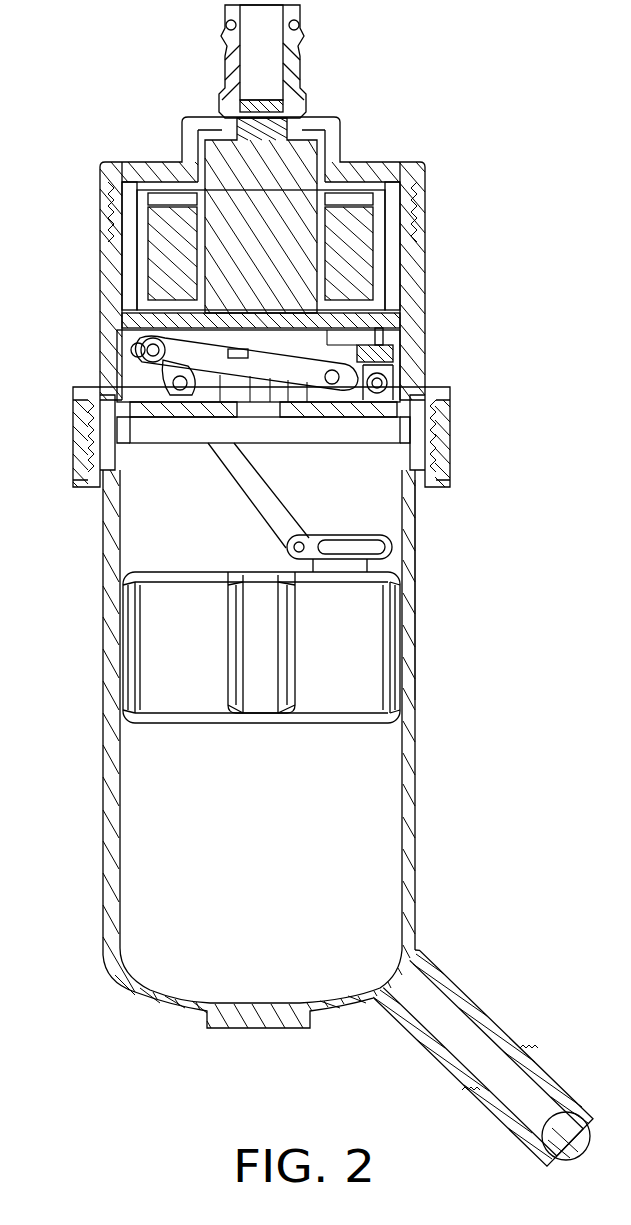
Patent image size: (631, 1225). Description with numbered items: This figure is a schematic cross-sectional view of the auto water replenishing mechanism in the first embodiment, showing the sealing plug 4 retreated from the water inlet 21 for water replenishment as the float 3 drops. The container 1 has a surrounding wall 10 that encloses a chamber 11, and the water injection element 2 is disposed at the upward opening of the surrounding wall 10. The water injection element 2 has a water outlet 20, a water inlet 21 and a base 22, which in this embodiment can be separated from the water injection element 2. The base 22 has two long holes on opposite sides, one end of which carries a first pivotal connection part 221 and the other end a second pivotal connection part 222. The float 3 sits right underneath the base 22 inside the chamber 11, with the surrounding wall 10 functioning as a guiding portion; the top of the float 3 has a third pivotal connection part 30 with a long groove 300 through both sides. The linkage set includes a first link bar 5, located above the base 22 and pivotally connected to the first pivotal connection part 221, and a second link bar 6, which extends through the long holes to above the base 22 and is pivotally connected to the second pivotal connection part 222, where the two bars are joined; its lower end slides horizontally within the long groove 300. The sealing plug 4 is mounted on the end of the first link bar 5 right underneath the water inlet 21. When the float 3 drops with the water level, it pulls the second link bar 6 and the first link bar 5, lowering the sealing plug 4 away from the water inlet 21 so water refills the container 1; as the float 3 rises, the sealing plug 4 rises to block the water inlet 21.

The container 1 is at (428, 609).
The water injection element 2 is at (425, 250).
The float 3 is at (320, 708).
The sealing plug 4 is at (412, 358).
The first link bar 5 is at (120, 345).
The second link bar 6 is at (230, 470).
The surrounding wall 10 is at (412, 722).
The chamber 11 is at (390, 795).
The water outlet 20 is at (300, 72).
The water inlet 21 is at (395, 338).
The base 22 is at (75, 440).
The third pivotal connection part 30 is at (307, 537).
The first pivotal connection part 221 is at (337, 400).
The second pivotal connection part 222 is at (172, 392).
The long groove 300 is at (372, 547).